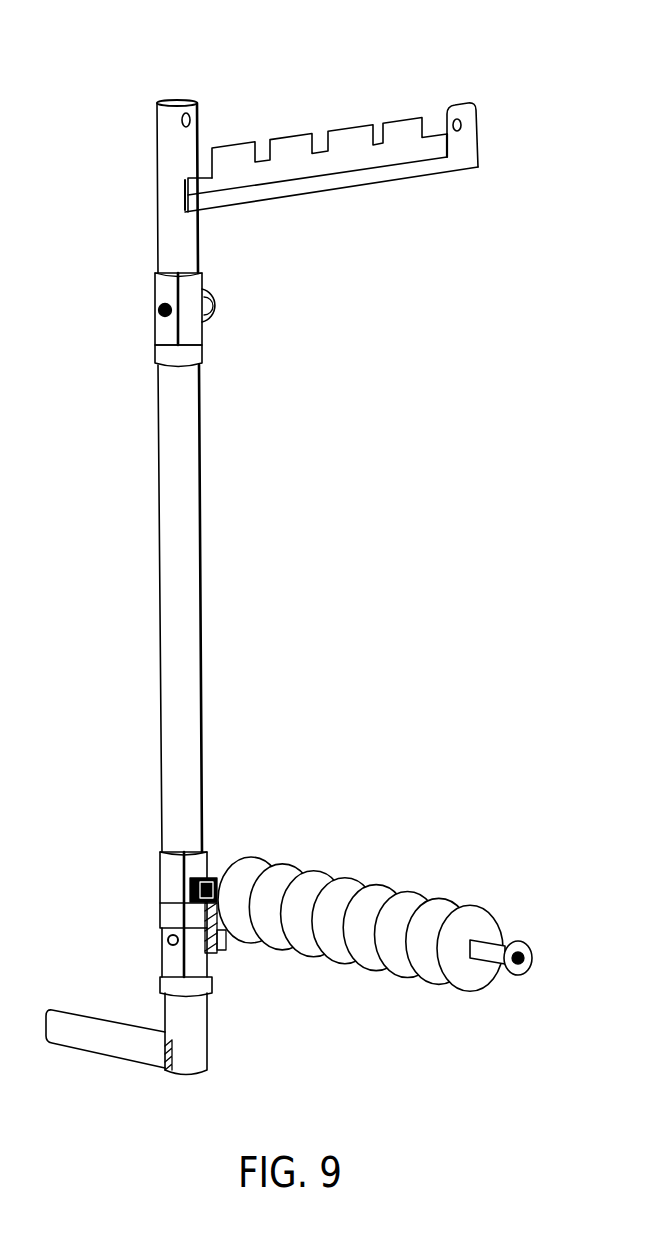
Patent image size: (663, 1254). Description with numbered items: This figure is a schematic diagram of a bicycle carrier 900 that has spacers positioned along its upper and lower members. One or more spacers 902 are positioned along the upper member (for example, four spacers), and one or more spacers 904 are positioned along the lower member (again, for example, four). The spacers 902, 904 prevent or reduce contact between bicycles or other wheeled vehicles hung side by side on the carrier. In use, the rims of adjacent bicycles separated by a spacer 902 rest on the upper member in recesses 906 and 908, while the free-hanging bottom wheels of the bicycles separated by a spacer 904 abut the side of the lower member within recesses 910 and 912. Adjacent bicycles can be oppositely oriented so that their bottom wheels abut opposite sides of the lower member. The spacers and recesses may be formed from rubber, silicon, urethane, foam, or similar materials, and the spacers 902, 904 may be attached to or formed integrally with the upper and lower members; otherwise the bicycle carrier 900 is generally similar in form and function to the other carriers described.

The bicycle carrier 900 is at (317, 53).
The spacer 902 is at (223, 146).
The spacer 904 is at (258, 860).
The recess 906 is at (208, 183).
The recess 908 is at (262, 165).
The recess 910 is at (208, 948).
The recess 912 is at (272, 928).